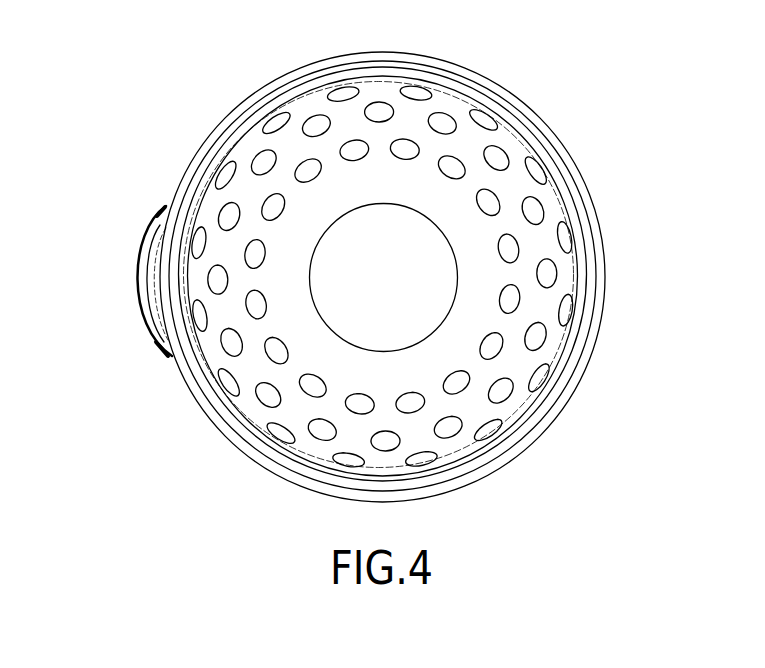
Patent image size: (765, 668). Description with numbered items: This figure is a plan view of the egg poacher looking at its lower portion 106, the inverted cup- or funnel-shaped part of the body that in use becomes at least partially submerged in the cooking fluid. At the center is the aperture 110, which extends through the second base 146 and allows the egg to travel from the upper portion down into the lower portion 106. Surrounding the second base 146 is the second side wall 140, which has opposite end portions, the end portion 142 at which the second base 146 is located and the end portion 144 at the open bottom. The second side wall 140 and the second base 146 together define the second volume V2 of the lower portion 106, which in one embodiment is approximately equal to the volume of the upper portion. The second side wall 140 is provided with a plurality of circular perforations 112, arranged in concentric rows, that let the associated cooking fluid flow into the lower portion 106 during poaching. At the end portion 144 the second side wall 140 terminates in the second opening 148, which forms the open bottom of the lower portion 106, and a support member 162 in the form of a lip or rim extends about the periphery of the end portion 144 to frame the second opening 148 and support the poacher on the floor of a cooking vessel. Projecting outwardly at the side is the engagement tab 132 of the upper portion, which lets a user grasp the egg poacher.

The lower portion 106 is at (150, 123).
The aperture 110 is at (433, 331).
The perforation 112 is at (406, 160).
The engagement tab 132 is at (138, 274).
The second side wall 140 is at (455, 106).
The end portion 142 is at (367, 371).
The end portion 144 is at (383, 97).
The second base 146 is at (386, 189).
The second opening 148 is at (567, 345).
The support member 162 is at (587, 177).
The second volume V2 is at (304, 113).